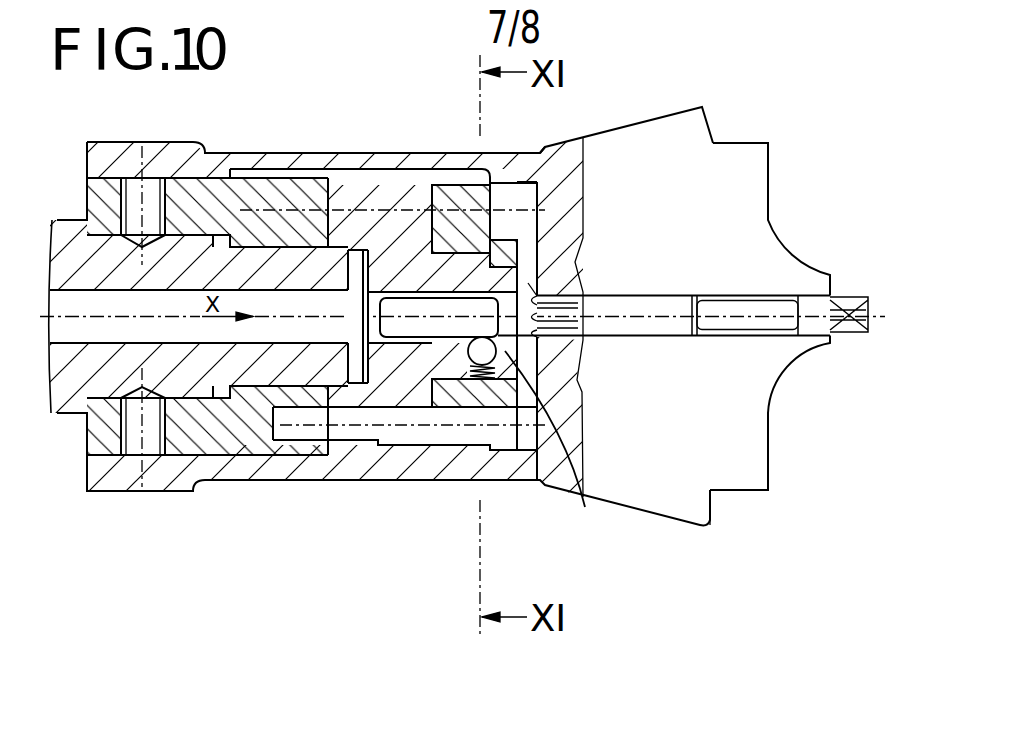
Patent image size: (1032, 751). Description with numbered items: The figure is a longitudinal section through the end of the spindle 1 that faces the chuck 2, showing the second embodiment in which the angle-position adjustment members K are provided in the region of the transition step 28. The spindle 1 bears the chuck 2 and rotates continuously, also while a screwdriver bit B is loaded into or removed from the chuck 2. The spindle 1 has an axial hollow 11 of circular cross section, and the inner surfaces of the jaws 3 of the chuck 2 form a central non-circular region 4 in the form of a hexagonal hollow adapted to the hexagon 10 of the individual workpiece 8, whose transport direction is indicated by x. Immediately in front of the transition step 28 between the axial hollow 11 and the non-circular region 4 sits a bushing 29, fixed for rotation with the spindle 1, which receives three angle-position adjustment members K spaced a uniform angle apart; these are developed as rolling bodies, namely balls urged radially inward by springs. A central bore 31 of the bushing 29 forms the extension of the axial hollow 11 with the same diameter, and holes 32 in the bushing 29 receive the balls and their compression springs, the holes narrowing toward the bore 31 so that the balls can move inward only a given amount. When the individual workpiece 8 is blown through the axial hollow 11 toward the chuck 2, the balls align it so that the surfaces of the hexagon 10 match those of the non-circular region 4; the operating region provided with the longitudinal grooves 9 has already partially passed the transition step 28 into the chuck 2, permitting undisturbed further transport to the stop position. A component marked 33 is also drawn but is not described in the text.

The spindle 1 is at (63, 205).
The chuck 2 is at (650, 520).
The jaws 3 is at (748, 178).
The non-circular region 4 is at (706, 525).
The individual workpiece 8 is at (494, 270).
The longitudinal grooves 9 is at (870, 298).
The hexagon 10 is at (450, 325).
The axial hollow 11 is at (310, 332).
The transition step 28 is at (528, 283).
The bushing 29 is at (468, 368).
The central bore 31 is at (382, 322).
The holes 32 is at (586, 500).
The ring 33 is at (483, 392).
The angle-position adjustment members K is at (516, 352).
The screwdriver bit B is at (777, 293).